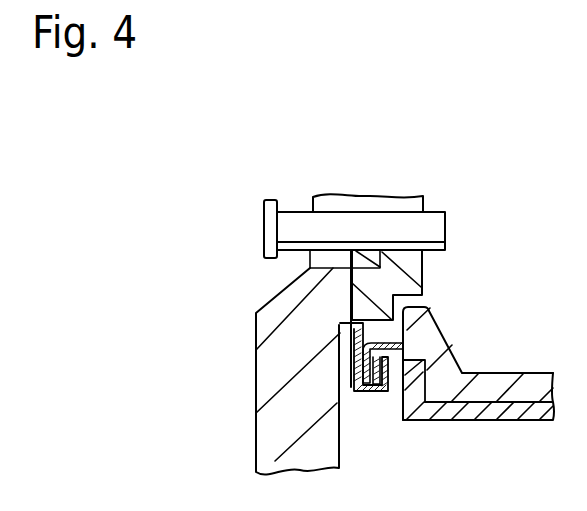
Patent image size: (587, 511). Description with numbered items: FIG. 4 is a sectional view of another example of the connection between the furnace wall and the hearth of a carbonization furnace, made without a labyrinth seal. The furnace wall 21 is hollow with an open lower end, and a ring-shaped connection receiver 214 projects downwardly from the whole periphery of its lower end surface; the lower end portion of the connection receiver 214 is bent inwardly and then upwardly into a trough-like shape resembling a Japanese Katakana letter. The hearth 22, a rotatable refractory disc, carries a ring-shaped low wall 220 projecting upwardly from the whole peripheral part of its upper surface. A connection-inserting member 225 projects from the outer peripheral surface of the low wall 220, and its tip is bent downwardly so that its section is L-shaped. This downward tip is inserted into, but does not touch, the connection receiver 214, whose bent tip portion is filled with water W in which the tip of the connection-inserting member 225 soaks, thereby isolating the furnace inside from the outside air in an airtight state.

The furnace wall 21 is at (413, 265).
The connection-inserting member 225 is at (340, 326).
The connection receiver 214 is at (340, 387).
The water W is at (372, 393).
The ring-shaped low wall 220 is at (430, 335).
The hearth 22 is at (460, 422).